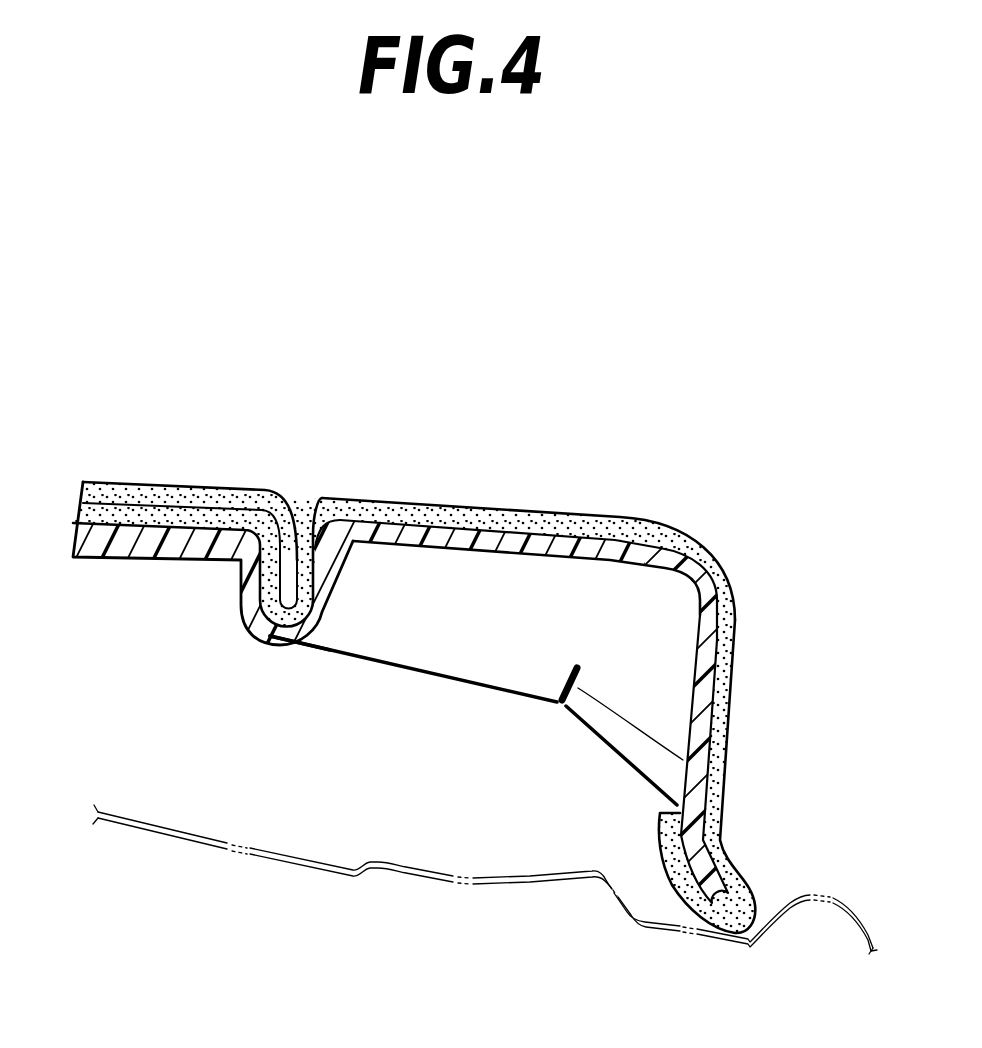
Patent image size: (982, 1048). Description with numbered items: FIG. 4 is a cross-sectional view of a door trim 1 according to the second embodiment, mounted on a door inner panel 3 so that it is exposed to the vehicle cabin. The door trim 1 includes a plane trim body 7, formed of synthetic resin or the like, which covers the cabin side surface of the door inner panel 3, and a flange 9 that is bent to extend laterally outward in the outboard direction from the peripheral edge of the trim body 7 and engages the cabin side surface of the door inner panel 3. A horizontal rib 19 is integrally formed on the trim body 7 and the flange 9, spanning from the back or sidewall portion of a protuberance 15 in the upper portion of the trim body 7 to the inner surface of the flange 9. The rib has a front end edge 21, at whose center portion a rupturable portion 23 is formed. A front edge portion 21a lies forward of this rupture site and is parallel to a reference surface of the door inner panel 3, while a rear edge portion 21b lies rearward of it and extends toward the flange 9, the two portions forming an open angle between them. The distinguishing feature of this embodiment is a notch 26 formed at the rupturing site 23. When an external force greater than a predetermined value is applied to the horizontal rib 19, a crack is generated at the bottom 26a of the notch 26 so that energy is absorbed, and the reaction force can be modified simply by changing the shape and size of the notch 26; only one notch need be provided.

The door trim 1 is at (491, 621).
The door inner panel 3 is at (428, 880).
The plane trim body 7 is at (642, 530).
The flange 9 is at (710, 727).
The protuberance 15 is at (247, 594).
The horizontal rib 19 is at (455, 618).
The front end edge 21 is at (473, 743).
The front edge portion 21a is at (338, 650).
The rear edge portion 21b is at (622, 758).
The rupturable portion 23 is at (530, 733).
The notch 26 is at (703, 775).
The bottom of the notch 26a is at (573, 664).